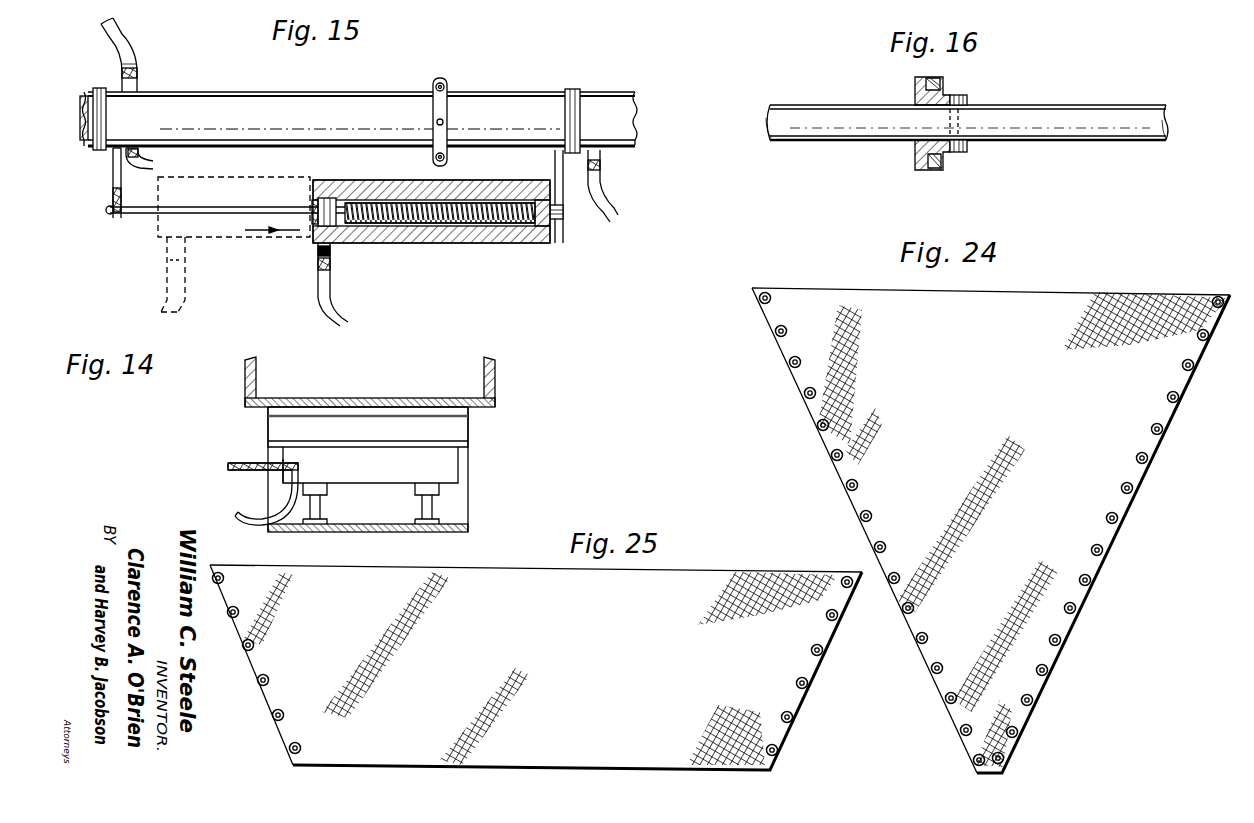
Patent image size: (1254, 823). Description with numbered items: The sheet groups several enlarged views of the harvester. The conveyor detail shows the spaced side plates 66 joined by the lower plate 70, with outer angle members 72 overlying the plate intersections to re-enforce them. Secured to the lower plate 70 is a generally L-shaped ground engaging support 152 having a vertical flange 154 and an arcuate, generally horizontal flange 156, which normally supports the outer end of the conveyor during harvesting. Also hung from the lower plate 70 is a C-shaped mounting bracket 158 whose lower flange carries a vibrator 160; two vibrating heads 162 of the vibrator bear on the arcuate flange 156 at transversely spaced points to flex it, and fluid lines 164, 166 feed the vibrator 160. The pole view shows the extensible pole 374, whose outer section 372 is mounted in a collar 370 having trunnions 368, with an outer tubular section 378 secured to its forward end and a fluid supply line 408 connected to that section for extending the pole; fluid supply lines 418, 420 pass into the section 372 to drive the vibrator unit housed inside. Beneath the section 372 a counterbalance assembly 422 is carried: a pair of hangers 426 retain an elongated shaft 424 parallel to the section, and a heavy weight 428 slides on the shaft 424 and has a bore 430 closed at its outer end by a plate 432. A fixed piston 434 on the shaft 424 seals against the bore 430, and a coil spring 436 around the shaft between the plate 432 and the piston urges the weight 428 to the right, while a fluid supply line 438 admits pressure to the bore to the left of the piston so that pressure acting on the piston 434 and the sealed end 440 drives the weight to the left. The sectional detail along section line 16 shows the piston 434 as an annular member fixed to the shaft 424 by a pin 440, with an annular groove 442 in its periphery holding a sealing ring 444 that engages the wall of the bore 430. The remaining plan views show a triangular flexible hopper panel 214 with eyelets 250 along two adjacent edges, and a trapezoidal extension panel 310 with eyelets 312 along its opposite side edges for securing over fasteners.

In FIG. 15, the section line 16 is at (296, 228).
In FIG. 14, the side plates 66 is at (259, 372).
In FIG. 14, the lower plate 70 is at (427, 398).
In FIG. 14, the outer angle members 72 is at (245, 403).
In FIG. 14, the ground engaging support 152 is at (469, 483).
In FIG. 14, the vertical flange 154 is at (462, 510).
In FIG. 14, the arcuate horizontal flange 156 is at (469, 530).
In FIG. 14, the mounting bracket 158 is at (469, 430).
In FIG. 14, the vibrator 160 is at (446, 468).
In FIG. 14, the vibrating head 162 is at (318, 525).
In FIG. 14, the fluid line 164 is at (232, 462).
In FIG. 14, the fluid line 166 is at (248, 513).
In FIG. 24, the flexible panel 214 is at (1098, 537).
In FIG. 24, the eyelets 250 is at (1163, 403).
In FIG. 25, the extension panel 310 is at (800, 580).
In FIG. 25, the eyelets 312 is at (834, 621).
In FIG. 15, the trunnions 368 is at (444, 122).
In FIG. 15, the collar 370 is at (444, 110).
In FIG. 15, the outer section 372 is at (264, 96).
In FIG. 15, the extensible pole 374 is at (609, 94).
In FIG. 15, the outer tubular section 378 is at (626, 119).
In FIG. 15, the fluid supply line 408 is at (601, 187).
In FIG. 15, the fluid supply line 418 is at (140, 61).
In FIG. 15, the fluid supply line 420 is at (240, 129).
In FIG. 15, the counterbalance assembly 422 is at (500, 245).
In FIG. 15, the shaft 424 is at (195, 207).
In FIG. 16, the shaft 424 is at (1046, 141).
In FIG. 15, the hangers 426 is at (113, 178).
In FIG. 15, the weight 428 is at (443, 256).
In FIG. 15, the bore 430 is at (516, 226).
In FIG. 15, the plate 432 is at (552, 229).
In FIG. 15, the piston 434 is at (340, 205).
In FIG. 16, the piston 434 is at (917, 150).
In FIG. 15, the coil spring 436 is at (412, 224).
In FIG. 15, the fluid supply line 438 is at (318, 297).
In FIG. 15, the pin 440 is at (321, 225).
In FIG. 16, the pin 440 is at (956, 153).
In FIG. 16, the annular groove 442 is at (940, 166).
In FIG. 16, the sealing ring 444 is at (931, 172).